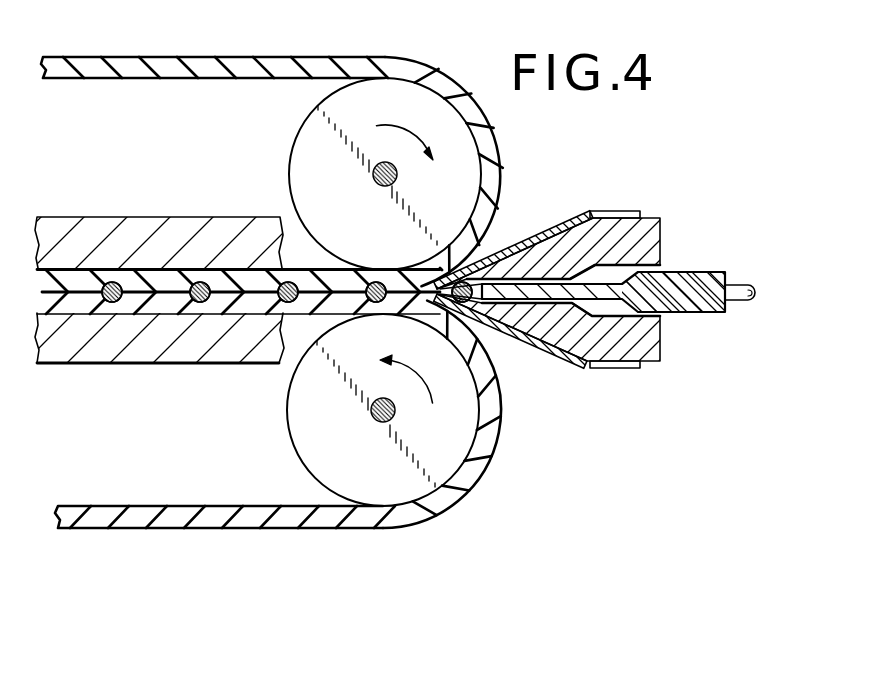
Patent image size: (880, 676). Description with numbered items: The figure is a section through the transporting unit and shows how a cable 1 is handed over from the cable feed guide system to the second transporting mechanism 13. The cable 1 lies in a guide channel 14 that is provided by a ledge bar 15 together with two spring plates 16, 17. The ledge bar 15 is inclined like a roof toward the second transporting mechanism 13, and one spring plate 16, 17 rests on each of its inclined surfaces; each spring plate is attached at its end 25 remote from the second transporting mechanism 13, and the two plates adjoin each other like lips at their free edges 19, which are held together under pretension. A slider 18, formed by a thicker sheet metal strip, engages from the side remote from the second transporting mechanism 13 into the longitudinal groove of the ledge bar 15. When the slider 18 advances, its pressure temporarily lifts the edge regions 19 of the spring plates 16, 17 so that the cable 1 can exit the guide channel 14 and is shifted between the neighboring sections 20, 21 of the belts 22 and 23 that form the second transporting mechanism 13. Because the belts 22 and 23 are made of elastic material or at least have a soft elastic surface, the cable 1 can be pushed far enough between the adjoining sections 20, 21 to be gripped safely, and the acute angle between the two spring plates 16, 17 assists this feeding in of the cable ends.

The cable 1 is at (480, 262).
The second transporting mechanism 13 is at (413, 59).
The guide channel 14 is at (469, 301).
The ledge bar 15 is at (518, 262).
The spring plate 16 is at (567, 222).
The spring plate 17 is at (541, 352).
The slider 18 is at (666, 283).
The edge regions 19 is at (418, 270).
The belt section 20 is at (123, 278).
The belt section 21 is at (192, 308).
The belt 22 is at (100, 57).
The belt 23 is at (178, 506).
The end 25 is at (625, 211).